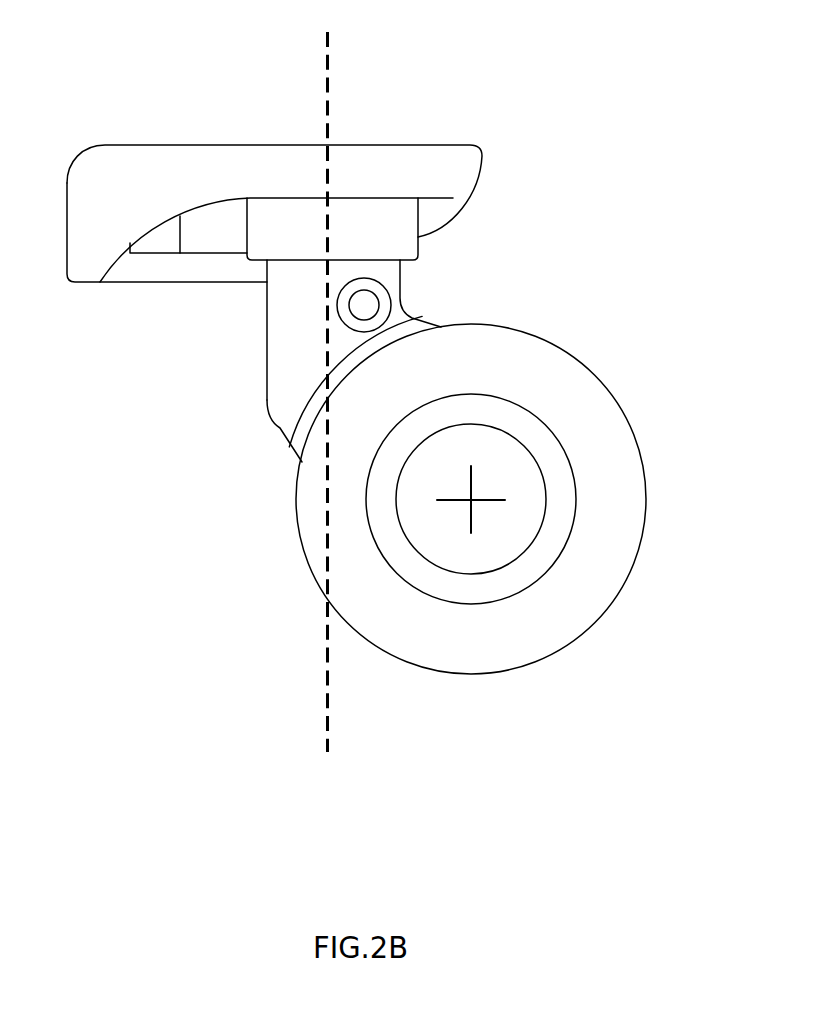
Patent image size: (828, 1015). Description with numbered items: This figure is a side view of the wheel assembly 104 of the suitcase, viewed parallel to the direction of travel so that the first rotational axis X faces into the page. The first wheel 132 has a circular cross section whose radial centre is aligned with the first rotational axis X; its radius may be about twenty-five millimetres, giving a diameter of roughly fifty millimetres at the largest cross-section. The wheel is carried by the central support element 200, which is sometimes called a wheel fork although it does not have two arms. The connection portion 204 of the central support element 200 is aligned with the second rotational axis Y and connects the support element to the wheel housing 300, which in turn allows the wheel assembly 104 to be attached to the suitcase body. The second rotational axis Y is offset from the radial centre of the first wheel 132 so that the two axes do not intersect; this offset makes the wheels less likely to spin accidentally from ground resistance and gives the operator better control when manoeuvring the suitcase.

The wheel assembly 104 is at (162, 110).
The wheel housing 300 is at (432, 167).
The central support element 200 is at (287, 328).
The connection portion 204 is at (282, 392).
The first wheel 132 is at (543, 382).
The first rotational axis X is at (473, 513).
The second rotational axis Y is at (327, 722).